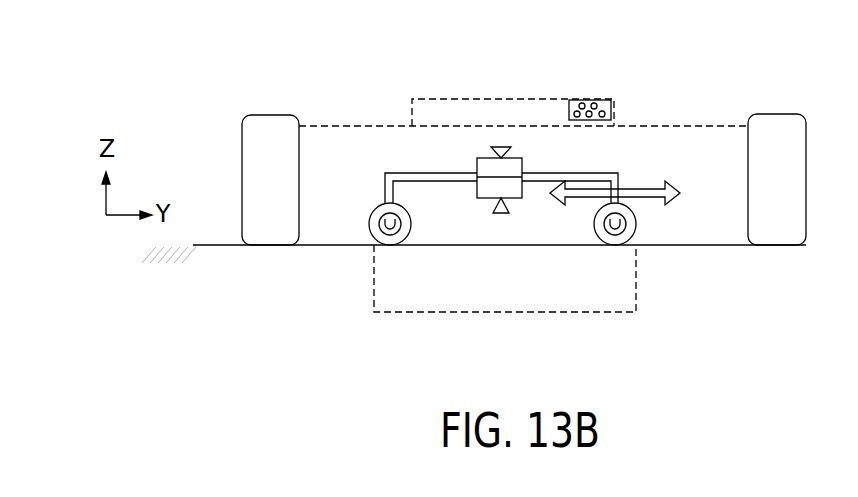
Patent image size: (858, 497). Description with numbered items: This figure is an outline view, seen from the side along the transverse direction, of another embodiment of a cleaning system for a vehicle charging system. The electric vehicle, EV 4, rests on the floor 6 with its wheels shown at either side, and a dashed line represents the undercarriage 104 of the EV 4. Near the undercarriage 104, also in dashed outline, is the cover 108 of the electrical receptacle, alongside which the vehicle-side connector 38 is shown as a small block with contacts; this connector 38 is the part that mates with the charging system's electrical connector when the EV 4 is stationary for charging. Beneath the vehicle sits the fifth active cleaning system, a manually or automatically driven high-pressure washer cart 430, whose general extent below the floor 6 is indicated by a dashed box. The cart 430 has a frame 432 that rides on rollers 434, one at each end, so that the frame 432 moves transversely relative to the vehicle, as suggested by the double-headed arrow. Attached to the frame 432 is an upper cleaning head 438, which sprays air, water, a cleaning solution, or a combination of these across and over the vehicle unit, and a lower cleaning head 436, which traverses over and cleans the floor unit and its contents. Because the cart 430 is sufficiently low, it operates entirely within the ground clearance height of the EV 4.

The EV 4 is at (769, 130).
The floor 6 is at (213, 244).
The connector 38 is at (601, 100).
The undercarriage 104 is at (345, 125).
The cover 108 is at (541, 100).
The high-pressure washer cart 430 is at (378, 196).
The frame 432 is at (396, 180).
The rollers 434 is at (371, 221).
The lower cleaning head 436 is at (516, 203).
The upper cleaning head 438 is at (486, 154).